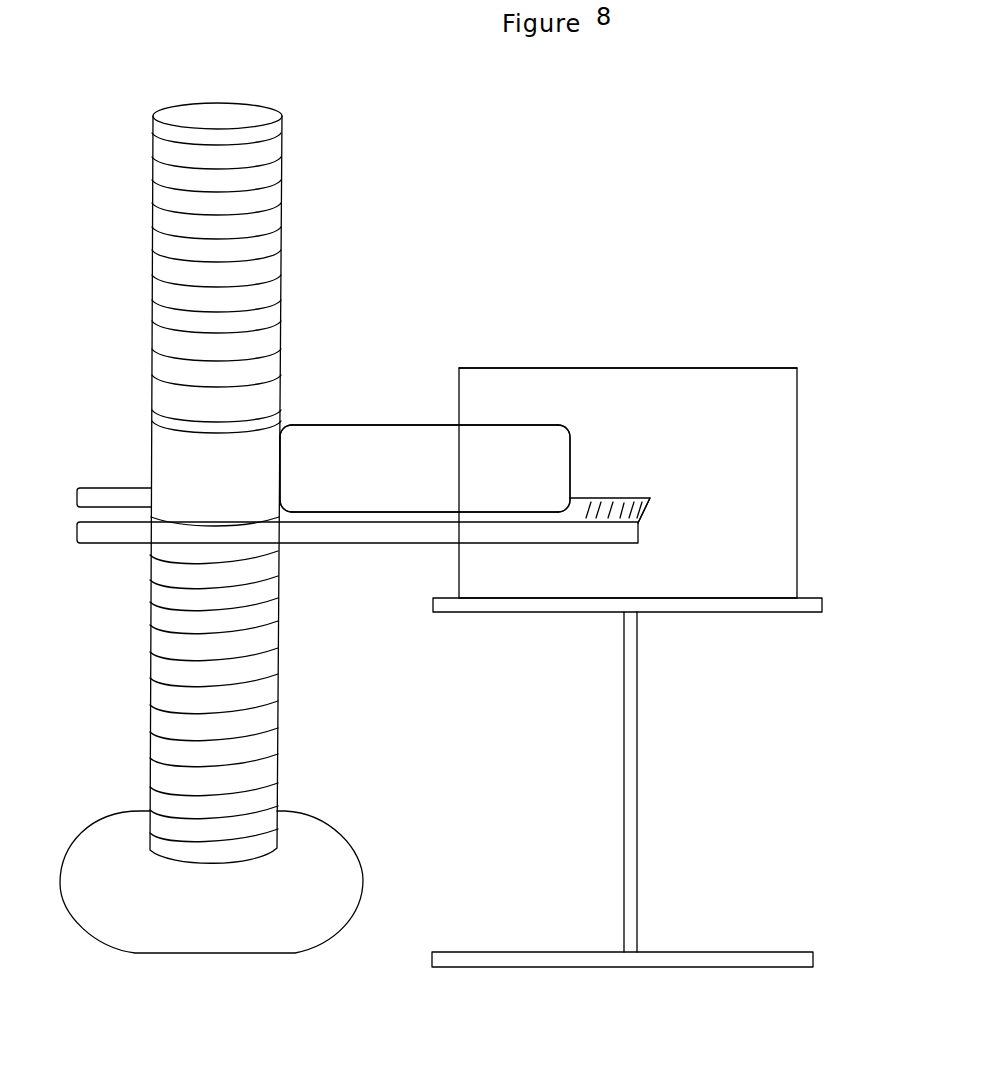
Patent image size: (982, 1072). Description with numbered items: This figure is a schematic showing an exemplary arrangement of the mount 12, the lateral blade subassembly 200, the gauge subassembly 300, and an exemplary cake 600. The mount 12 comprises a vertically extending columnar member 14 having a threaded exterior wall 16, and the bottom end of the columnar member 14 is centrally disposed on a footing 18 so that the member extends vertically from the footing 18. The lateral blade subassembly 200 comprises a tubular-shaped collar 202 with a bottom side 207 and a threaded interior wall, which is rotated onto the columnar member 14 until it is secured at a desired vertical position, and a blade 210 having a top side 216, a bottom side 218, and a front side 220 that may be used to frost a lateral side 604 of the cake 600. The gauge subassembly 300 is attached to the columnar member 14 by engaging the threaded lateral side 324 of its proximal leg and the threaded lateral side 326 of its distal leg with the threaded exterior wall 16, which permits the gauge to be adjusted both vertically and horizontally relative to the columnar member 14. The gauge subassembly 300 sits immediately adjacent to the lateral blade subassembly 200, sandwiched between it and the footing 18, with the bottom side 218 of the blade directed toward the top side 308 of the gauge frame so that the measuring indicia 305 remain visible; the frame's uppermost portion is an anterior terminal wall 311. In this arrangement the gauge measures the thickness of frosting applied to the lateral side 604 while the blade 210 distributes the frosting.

The mount 12 is at (302, 96).
The columnar member 14 is at (291, 176).
The threaded exterior wall 16 is at (266, 239).
The footing 18 is at (325, 837).
The collar 202 is at (174, 448).
The bottom side 207 is at (170, 517).
The lateral blade subassembly 200 is at (349, 355).
The blade 210 is at (300, 433).
The top side 216 is at (405, 425).
The bottom side 218 is at (363, 513).
The front side 220 is at (332, 440).
The gauge subassembly 300 is at (426, 566).
The measuring indicia 305 is at (617, 518).
The top side 308 is at (580, 507).
The anterior terminal wall 311 is at (654, 509).
The threaded lateral side 324 is at (120, 509).
The threaded lateral side 326 is at (316, 522).
The cake 600 is at (685, 339).
The lateral side 604 is at (617, 398).